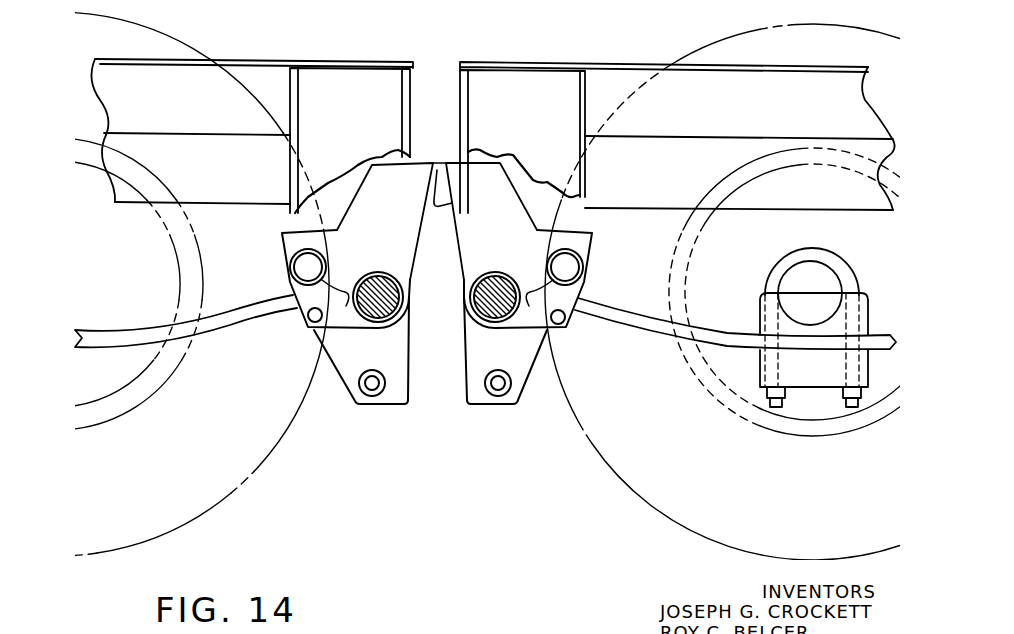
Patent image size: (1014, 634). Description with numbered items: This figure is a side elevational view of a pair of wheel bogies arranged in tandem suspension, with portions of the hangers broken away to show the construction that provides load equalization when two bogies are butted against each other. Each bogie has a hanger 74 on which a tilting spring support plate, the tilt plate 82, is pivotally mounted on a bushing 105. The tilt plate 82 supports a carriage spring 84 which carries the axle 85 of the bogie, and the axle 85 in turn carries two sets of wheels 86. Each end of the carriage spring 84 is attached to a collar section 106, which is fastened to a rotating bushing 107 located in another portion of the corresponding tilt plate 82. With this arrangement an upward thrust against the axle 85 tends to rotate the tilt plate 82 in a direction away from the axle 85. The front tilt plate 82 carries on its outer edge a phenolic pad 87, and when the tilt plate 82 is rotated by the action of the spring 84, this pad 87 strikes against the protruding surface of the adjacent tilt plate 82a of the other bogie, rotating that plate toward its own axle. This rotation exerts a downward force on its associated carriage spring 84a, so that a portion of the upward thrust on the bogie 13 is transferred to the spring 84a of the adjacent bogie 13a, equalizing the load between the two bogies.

The bogie 13 is at (605, 77).
The adjacent bogie 13a is at (355, 78).
The tilt plate 82 is at (507, 190).
The adjacent tilt plate 82a is at (415, 170).
The phenolic pad 87 is at (437, 208).
The rotating bushing 107 is at (582, 256).
The collar section 106 is at (586, 291).
The bushing 105 is at (467, 317).
The hanger 74 is at (470, 395).
The carriage spring 84 is at (622, 318).
The carriage spring of adjacent bogie 84a is at (253, 315).
The axle 85 is at (815, 277).
The wheels 86 is at (625, 448).